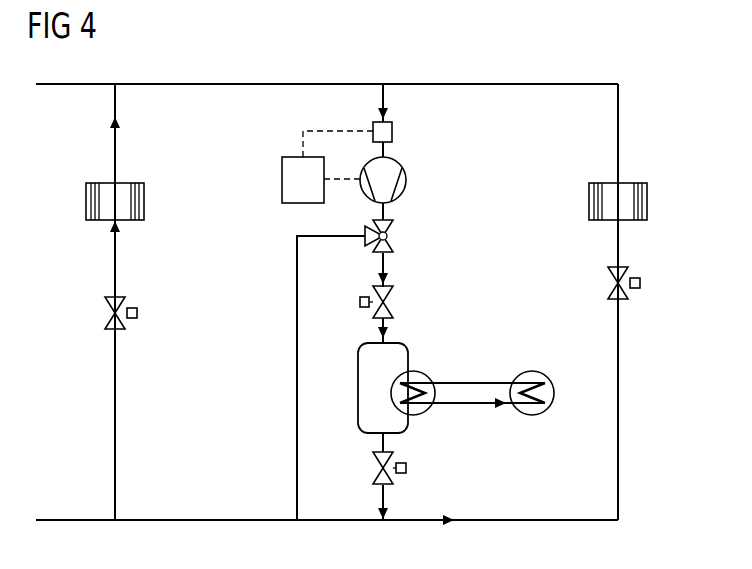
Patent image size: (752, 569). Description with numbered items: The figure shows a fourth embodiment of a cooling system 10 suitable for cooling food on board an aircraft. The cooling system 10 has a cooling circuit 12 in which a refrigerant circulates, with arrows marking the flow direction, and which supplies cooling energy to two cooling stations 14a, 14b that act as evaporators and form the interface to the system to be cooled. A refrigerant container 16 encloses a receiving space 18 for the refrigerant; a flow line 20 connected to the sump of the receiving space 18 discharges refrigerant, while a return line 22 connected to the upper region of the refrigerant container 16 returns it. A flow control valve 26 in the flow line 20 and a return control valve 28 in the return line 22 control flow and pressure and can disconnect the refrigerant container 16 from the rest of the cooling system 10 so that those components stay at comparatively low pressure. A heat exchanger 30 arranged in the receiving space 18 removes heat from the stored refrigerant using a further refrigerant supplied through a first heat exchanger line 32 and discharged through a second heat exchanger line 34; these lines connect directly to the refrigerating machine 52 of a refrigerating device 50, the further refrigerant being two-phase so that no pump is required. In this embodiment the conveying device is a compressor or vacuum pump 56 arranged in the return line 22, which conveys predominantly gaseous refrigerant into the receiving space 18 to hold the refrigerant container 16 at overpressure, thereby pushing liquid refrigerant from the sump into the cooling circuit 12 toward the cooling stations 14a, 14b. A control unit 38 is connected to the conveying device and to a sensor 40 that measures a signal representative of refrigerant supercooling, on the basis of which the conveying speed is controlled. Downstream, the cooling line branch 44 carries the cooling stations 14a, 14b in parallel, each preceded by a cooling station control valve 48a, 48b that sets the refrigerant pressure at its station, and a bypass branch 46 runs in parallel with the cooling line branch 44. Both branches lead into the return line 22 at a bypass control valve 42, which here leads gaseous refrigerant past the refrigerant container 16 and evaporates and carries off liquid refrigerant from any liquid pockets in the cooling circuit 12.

The cooling system 10 is at (604, 60).
The cooling circuit 12 is at (648, 505).
The cooling station 14a is at (84, 201).
The cooling station 14b is at (649, 201).
The refrigerant container 16 is at (398, 341).
The receiving space 18 is at (370, 370).
The flow line 20 is at (380, 505).
The return line 22 is at (386, 269).
The flow control valve 26 is at (408, 468).
The return control valve 28 is at (359, 302).
The heat exchanger 30 is at (421, 372).
The first heat exchanger line 32 is at (477, 380).
The second heat exchanger line 34 is at (480, 407).
The control unit 38 is at (281, 180).
The sensor 40 is at (394, 131).
The bypass control valve 42 is at (394, 233).
The cooling line branch 44 is at (211, 518).
The bypass branch 46 is at (295, 372).
The cooling station control valve 48a is at (139, 313).
The cooling station control valve 48b is at (642, 283).
The refrigerating device 50 is at (502, 381).
The refrigerating machine 52 is at (556, 393).
The compressor or vacuum pump 56 is at (407, 183).